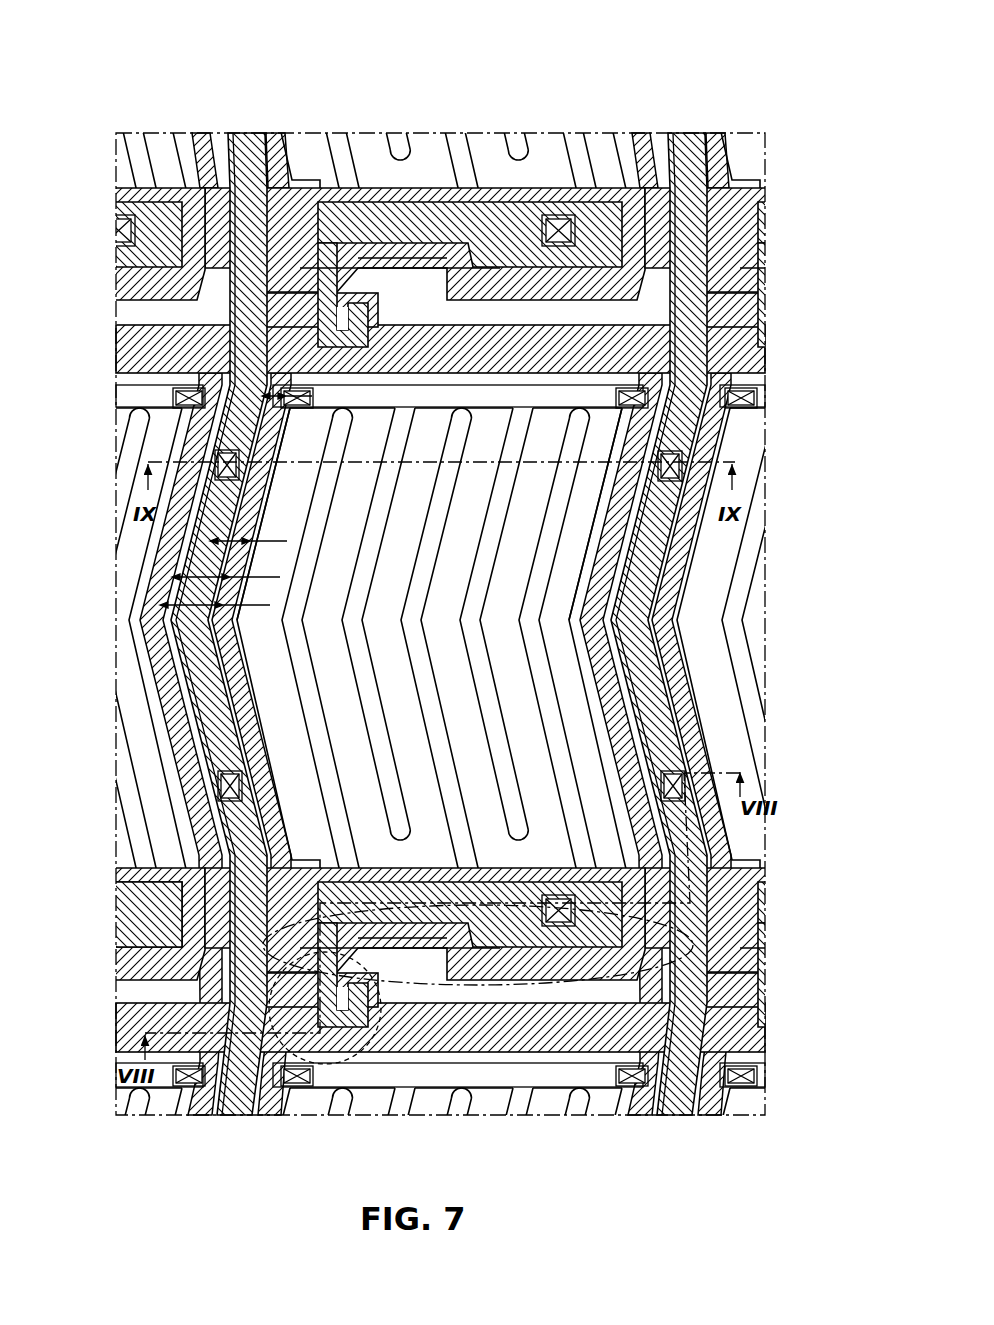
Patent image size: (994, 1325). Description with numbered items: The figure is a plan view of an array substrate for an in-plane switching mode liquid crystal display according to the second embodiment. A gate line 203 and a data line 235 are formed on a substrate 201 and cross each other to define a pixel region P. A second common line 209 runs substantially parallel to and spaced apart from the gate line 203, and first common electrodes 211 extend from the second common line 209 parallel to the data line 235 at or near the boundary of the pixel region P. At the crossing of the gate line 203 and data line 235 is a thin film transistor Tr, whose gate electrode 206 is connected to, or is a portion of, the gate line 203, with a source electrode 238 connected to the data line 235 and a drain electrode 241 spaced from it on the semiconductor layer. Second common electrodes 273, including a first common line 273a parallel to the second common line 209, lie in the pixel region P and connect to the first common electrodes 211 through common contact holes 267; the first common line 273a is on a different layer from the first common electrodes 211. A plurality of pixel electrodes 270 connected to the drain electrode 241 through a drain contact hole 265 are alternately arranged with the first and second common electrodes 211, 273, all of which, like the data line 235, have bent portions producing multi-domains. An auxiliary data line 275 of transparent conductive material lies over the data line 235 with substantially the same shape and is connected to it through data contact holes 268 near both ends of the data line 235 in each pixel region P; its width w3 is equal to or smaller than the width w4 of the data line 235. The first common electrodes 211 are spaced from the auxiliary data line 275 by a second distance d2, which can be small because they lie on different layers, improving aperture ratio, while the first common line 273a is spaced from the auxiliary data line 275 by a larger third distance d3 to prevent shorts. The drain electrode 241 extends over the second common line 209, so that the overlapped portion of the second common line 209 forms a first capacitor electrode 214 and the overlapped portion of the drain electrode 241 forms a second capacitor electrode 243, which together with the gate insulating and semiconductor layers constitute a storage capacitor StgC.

The substrate 201 is at (567, 112).
The pixel region P is at (447, 477).
The first common line 273a is at (458, 392).
The common contact holes 267 is at (314, 398).
The data contact holes 268 is at (212, 456).
The auxiliary data line 275 is at (388, 624).
The data line 235 is at (178, 553).
The pixel electrodes 270 is at (297, 643).
The second common electrodes 273 is at (357, 653).
The first common electrodes 211 is at (264, 506).
The drain contact hole 265 is at (556, 896).
The second common line 209 is at (180, 928).
The drain electrode 241 is at (372, 940).
The first capacitor electrode 214 is at (452, 892).
The gate electrode 206 is at (338, 1030).
The source electrode 238 is at (375, 1040).
The gate line 203 is at (493, 1037).
The second capacitor electrode 243 is at (525, 965).
The thin film transistor Tr is at (322, 1065).
The storage capacitor StgC is at (574, 880).
The second distance d2 is at (296, 542).
The third distance d3 is at (276, 418).
The width of the auxiliary data line w3 is at (290, 578).
The width of the data line w4 is at (286, 606).